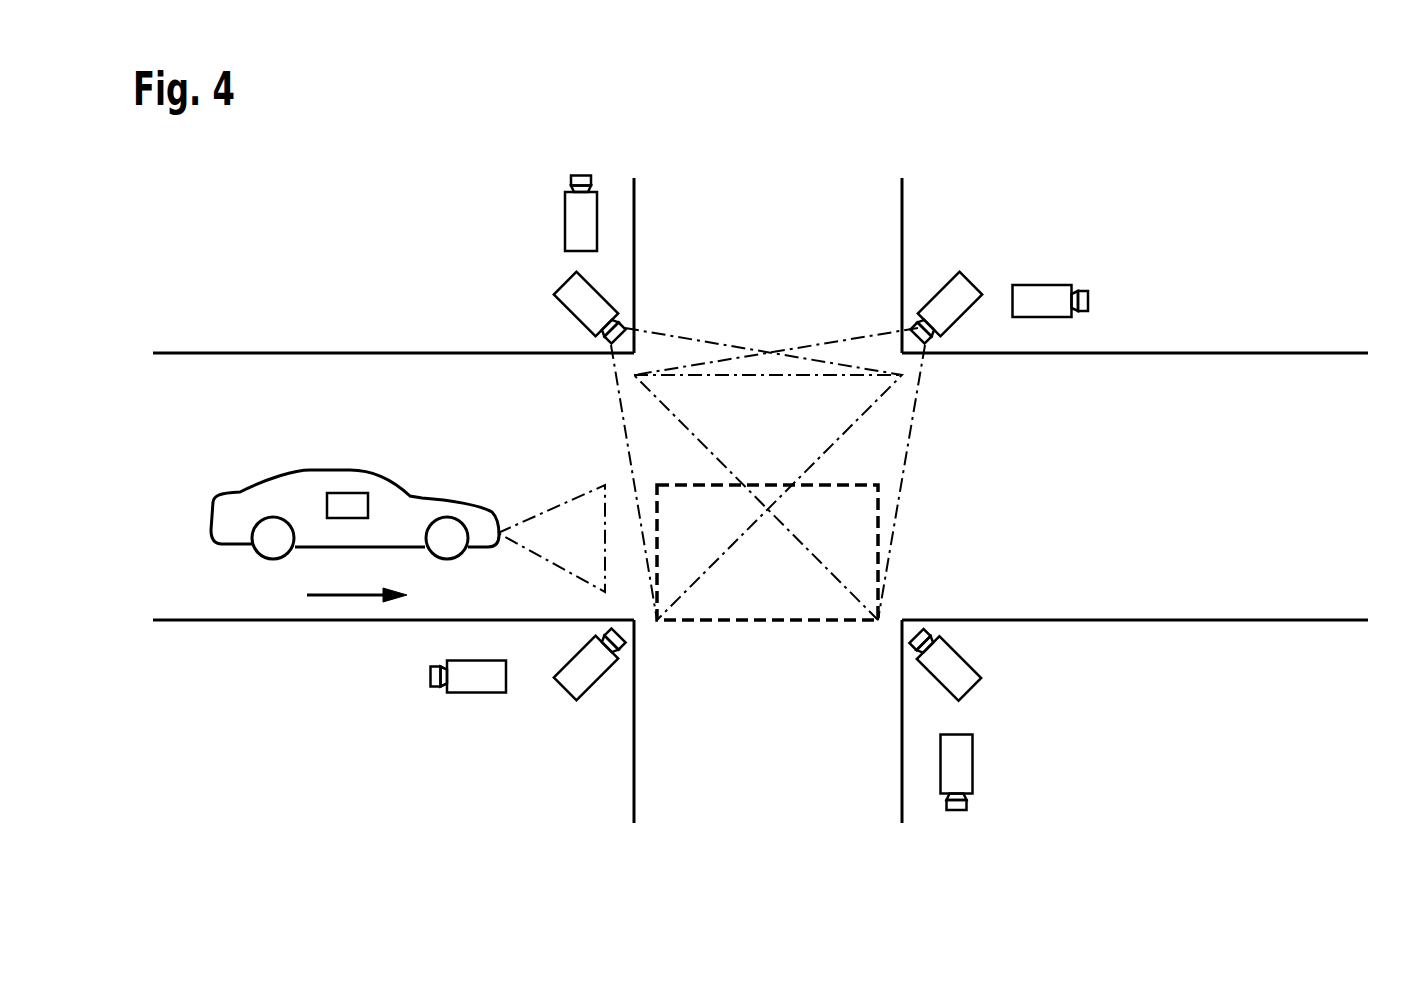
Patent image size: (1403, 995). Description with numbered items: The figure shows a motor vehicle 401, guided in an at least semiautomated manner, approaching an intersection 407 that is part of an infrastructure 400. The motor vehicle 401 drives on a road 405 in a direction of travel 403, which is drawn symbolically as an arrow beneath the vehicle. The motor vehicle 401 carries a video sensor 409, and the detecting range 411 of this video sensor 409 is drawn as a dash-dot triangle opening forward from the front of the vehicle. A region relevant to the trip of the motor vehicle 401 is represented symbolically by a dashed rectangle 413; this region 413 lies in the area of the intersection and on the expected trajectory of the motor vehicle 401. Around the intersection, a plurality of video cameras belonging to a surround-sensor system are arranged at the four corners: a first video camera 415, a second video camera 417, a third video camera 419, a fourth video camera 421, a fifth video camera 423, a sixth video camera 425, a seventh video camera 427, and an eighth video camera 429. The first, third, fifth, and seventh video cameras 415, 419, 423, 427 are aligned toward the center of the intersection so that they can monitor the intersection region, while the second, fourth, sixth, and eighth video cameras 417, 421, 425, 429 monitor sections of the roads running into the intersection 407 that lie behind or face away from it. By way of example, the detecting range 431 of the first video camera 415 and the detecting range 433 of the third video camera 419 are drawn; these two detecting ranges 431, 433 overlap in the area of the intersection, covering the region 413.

The infrastructure 400 is at (1218, 160).
The motor vehicle 401 is at (283, 492).
The direction of travel 403 is at (348, 597).
The road 405 is at (195, 387).
The intersection 407 is at (955, 420).
The video sensor 409 is at (350, 500).
The detecting range of video sensor 411 is at (553, 515).
The region relevant to the trip 413 is at (880, 542).
The first video camera 415 is at (583, 303).
The second video camera 417 is at (580, 220).
The third video camera 419 is at (945, 293).
The fourth video camera 421 is at (1042, 293).
The fifth video camera 423 is at (960, 668).
The sixth video camera 425 is at (960, 765).
The seventh video camera 427 is at (587, 675).
The eighth video camera 429 is at (478, 680).
The detecting range of first video camera 431 is at (662, 347).
The detecting range of third video camera 433 is at (873, 345).